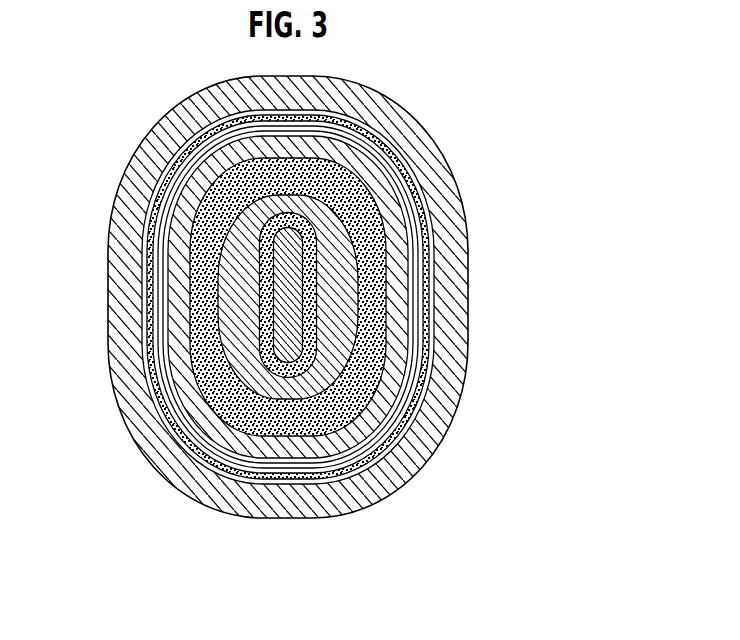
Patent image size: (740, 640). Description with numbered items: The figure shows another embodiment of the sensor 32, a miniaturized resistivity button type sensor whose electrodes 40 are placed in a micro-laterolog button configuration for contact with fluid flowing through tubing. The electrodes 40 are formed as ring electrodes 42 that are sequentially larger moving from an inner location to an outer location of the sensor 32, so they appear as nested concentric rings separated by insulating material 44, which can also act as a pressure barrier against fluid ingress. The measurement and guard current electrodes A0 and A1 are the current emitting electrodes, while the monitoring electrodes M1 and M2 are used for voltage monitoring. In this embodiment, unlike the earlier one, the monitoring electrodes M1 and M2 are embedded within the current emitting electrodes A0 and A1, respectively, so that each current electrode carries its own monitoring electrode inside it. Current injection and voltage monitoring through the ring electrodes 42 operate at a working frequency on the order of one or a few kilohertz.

The sensor 32 is at (142, 120).
The electrodes 40 is at (297, 375).
The ring electrodes 42 is at (302, 227).
The insulating material 44 is at (313, 281).
The guard current electrode A1 is at (175, 197).
The measurement current electrode A0 is at (225, 352).
The monitoring electrode M1 is at (268, 298).
The monitoring electrode M2 is at (148, 275).